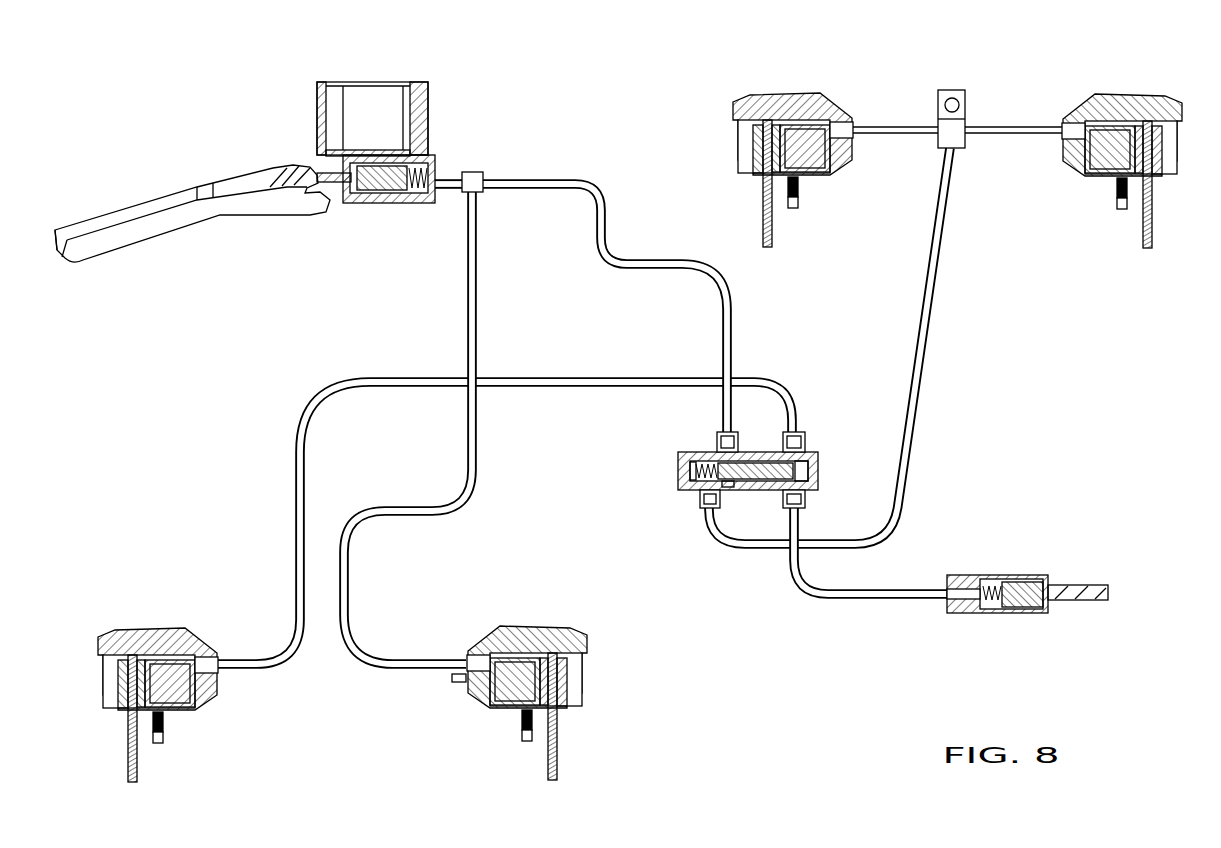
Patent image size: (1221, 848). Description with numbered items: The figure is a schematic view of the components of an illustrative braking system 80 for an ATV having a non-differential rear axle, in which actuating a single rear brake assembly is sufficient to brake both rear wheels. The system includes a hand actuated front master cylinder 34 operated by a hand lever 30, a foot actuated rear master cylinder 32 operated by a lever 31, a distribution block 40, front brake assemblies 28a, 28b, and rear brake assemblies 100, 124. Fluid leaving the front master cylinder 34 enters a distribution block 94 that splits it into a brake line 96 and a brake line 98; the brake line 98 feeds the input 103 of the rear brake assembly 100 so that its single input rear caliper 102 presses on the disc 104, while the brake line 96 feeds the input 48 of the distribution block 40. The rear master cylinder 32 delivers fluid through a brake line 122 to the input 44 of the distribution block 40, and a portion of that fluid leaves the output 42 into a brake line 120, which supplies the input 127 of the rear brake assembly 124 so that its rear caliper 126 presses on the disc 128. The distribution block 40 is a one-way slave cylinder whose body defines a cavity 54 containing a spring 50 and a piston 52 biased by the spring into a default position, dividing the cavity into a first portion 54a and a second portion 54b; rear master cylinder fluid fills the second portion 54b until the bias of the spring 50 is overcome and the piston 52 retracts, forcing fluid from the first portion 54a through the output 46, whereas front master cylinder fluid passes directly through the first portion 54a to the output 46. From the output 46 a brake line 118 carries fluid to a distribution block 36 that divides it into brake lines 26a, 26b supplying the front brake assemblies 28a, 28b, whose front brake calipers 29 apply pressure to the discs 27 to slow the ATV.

The braking system 80 is at (636, 100).
The front master cylinder 34 is at (442, 104).
The hand lever 30 is at (178, 222).
The distribution block 94 is at (472, 172).
The brake line 96 is at (560, 179).
The brake line 98 is at (478, 275).
The brake line 120 is at (763, 379).
The brake line 118 is at (921, 384).
The brake line 122 is at (840, 599).
The distribution block 40 is at (745, 449).
The output 42 is at (806, 441).
The input 44 is at (806, 500).
The output 46 is at (703, 505).
The input 48 is at (717, 442).
The spring 50 is at (697, 467).
The piston 52 is at (752, 464).
The cavity 54 is at (730, 488).
The first portion 54a is at (692, 478).
The second portion 54b is at (812, 470).
The distribution block 36 is at (965, 108).
The brake line 26a is at (888, 135).
The brake line 26b is at (1013, 135).
The front brake assembly 28a is at (830, 88).
The front brake assembly 28b is at (1162, 88).
The disc 27 is at (773, 224).
The front brake caliper 29 is at (824, 196).
The rear master cylinder 32 is at (1028, 580).
The lever 31 is at (1082, 601).
The rear brake assembly 100 is at (515, 667).
The rear caliper 102 is at (514, 748).
The input 103 is at (470, 663).
The disc 104 is at (558, 738).
The rear brake assembly 124 is at (168, 661).
The rear caliper 126 is at (174, 718).
The input 127 is at (217, 662).
The disc 128 is at (127, 751).